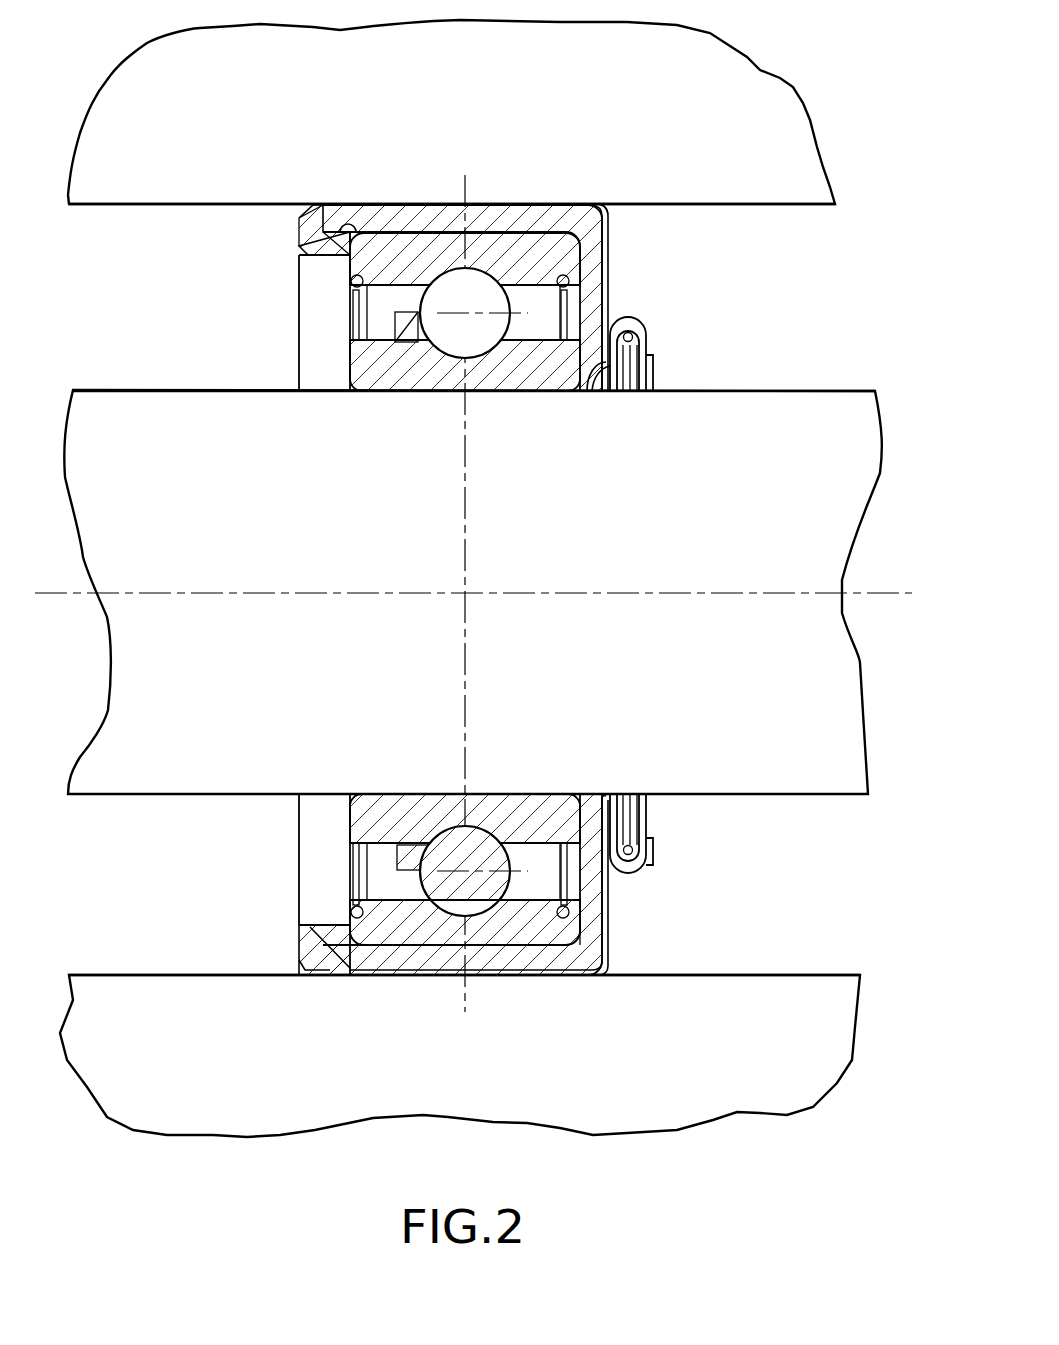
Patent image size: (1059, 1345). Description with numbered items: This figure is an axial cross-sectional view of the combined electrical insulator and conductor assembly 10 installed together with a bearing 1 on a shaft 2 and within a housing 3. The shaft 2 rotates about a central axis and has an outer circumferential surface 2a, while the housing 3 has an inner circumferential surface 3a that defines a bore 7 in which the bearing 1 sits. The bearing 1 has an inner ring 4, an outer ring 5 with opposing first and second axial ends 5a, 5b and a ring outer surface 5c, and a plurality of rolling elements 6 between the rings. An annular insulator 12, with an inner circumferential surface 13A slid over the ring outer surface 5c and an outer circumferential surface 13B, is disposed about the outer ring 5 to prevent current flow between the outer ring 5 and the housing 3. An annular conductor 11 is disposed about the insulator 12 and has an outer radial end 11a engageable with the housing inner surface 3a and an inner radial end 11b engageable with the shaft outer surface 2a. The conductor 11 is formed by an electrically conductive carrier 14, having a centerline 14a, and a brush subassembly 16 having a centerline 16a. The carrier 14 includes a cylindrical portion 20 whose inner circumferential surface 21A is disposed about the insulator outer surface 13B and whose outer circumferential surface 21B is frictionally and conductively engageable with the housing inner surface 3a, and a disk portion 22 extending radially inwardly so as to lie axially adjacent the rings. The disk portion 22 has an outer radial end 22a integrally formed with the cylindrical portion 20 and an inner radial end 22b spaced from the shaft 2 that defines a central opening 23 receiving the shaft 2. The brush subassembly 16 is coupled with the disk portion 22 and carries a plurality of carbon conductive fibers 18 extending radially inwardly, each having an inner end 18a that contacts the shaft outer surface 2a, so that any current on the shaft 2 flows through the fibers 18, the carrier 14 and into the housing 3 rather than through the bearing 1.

The bearing 1 is at (308, 853).
The shaft 2 is at (44, 423).
The outer circumferential surface 2a is at (818, 391).
The housing 3 is at (723, 90).
The inner circumferential surface 3a is at (88, 206).
The inner ring 4 is at (403, 788).
The outer ring 5 is at (432, 940).
The first axial end 5a is at (583, 915).
The second axial end 5b is at (353, 915).
The ring outer surface 5c is at (398, 955).
The rolling elements 6 is at (482, 836).
The bore 7 is at (795, 893).
The combined electrical insulator and conductor assembly 10 is at (760, 262).
The annular conductor 11 is at (695, 312).
The outer radial end 11a is at (487, 188).
The inner radial end 11b is at (633, 400).
The annular insulator 12 is at (266, 249).
The inner circumferential surface 13A is at (378, 240).
The outer circumferential surface 13B is at (408, 205).
The electrically conductive carrier 14 is at (665, 236).
The centerline 14a is at (473, 593).
The brush subassembly 16 is at (690, 344).
The centerline 16a is at (240, 593).
The conductive fibers 18 is at (640, 355).
The inner end 18a is at (620, 392).
The cylindrical portion 20 is at (526, 197).
The inner circumferential surface 21A is at (495, 965).
The outer circumferential surface 21B is at (557, 978).
The disk portion 22 is at (625, 283).
The outer radial end 22a is at (605, 218).
The inner radial end 22b is at (603, 365).
The central opening 23 is at (603, 798).